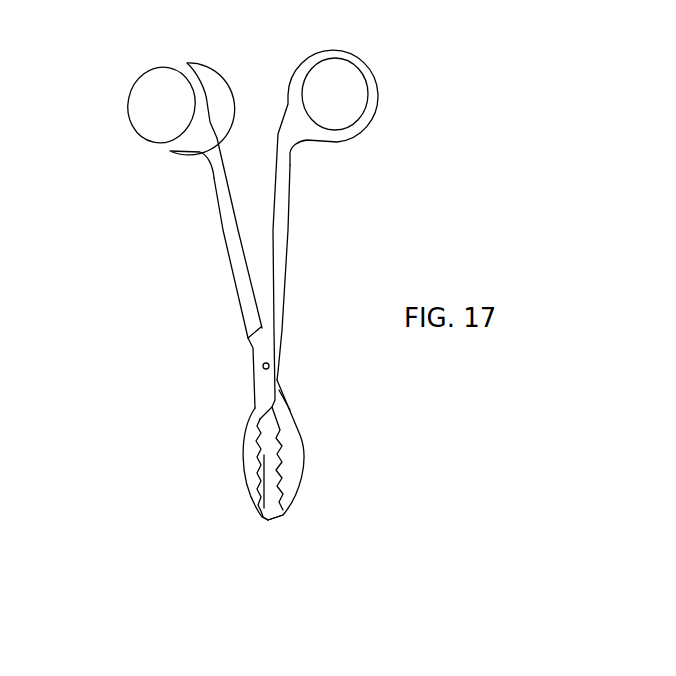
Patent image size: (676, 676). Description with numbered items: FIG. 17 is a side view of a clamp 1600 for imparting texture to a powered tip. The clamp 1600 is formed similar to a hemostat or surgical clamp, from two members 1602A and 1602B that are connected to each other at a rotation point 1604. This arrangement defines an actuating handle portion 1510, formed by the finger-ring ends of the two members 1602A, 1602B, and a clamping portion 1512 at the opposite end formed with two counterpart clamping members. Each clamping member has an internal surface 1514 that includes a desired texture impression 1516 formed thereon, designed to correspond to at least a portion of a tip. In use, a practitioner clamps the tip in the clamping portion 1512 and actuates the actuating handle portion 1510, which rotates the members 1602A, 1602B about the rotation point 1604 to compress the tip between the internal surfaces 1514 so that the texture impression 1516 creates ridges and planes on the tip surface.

The clamp 1600 is at (403, 248).
The handle assembly 1510 is at (199, 275).
The member 1602A is at (289, 167).
The member 1602B is at (219, 180).
The rotation point 1604 is at (270, 366).
The jaw assembly 1512 is at (226, 458).
The texture impression 1516 is at (279, 458).
The internal surface 1514 is at (267, 522).